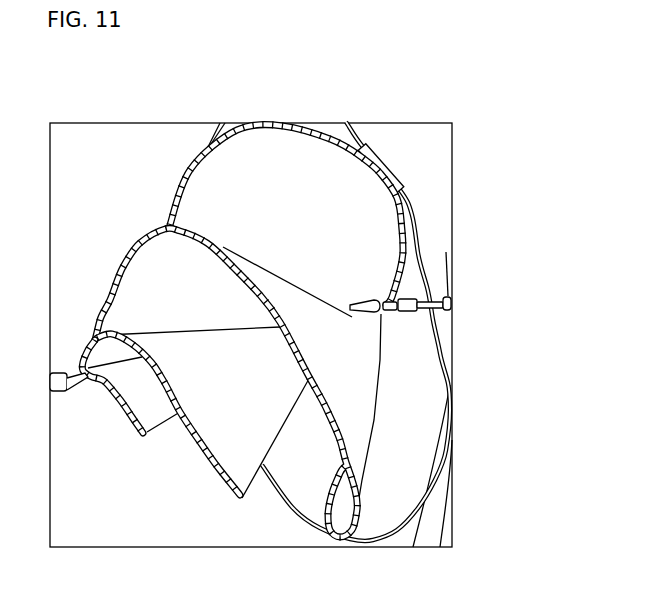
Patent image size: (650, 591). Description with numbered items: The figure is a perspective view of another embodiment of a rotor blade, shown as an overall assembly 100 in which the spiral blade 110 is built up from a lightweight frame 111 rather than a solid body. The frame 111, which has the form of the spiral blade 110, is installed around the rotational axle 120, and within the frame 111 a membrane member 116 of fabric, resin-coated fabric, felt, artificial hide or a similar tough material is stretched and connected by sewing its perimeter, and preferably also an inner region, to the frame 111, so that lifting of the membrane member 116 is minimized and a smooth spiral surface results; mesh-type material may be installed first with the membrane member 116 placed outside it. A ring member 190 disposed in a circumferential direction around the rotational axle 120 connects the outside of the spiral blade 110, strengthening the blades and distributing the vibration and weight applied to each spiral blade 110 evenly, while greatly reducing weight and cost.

The implant device 100 is at (405, 118).
The spiral blade 110 is at (261, 151).
The frame 111 is at (320, 385).
The membrane member 116 is at (337, 197).
The rotational axle 120 is at (420, 297).
The ring member 190 is at (423, 240).